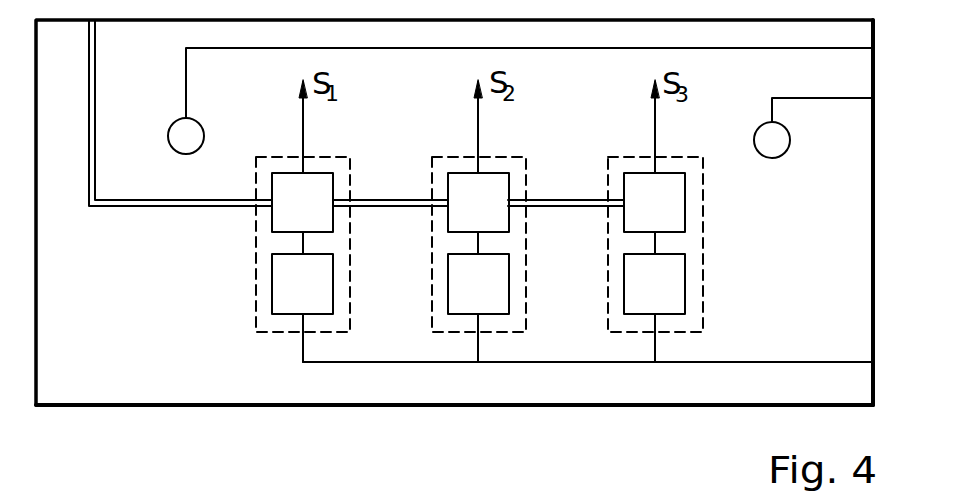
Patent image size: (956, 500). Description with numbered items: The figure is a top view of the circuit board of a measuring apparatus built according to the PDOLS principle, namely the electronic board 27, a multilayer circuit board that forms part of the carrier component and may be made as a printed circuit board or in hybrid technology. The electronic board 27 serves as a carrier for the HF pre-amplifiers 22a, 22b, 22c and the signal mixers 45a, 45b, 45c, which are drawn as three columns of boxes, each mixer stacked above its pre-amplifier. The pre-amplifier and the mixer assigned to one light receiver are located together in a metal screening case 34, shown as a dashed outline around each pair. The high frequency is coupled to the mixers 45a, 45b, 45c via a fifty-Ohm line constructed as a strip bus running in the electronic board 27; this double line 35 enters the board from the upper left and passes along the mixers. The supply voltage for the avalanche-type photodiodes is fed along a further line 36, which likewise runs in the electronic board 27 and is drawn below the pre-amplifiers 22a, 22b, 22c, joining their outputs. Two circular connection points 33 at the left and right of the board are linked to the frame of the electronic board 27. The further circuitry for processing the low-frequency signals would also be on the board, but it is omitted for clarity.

The electronic board 27 is at (155, 60).
The supply line 35 is at (92, 96).
The connection terminal 33 is at (174, 137).
The metal screening case 34 is at (350, 252).
The signal mixer 45a is at (284, 176).
The signal mixer 45b is at (463, 176).
The signal mixer 45c is at (638, 176).
The HF pre-amplifier 22a is at (323, 297).
The HF pre-amplifier 22b is at (498, 297).
The HF pre-amplifier 22c is at (672, 305).
The line 36 is at (415, 362).